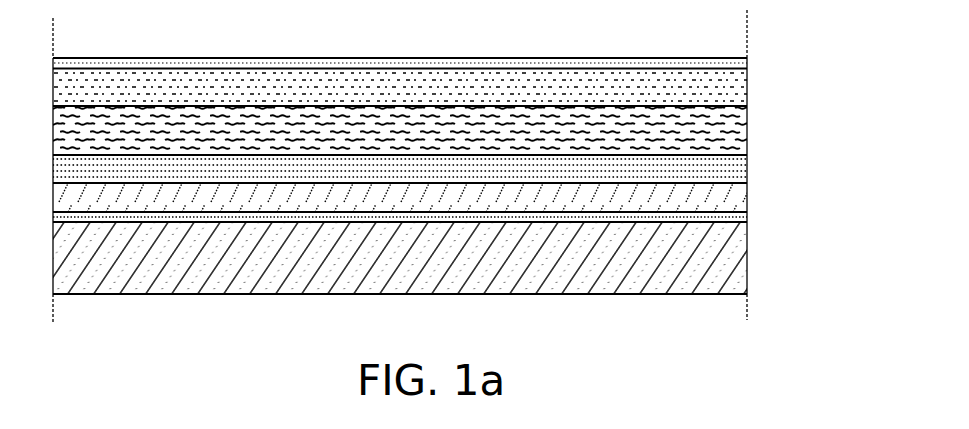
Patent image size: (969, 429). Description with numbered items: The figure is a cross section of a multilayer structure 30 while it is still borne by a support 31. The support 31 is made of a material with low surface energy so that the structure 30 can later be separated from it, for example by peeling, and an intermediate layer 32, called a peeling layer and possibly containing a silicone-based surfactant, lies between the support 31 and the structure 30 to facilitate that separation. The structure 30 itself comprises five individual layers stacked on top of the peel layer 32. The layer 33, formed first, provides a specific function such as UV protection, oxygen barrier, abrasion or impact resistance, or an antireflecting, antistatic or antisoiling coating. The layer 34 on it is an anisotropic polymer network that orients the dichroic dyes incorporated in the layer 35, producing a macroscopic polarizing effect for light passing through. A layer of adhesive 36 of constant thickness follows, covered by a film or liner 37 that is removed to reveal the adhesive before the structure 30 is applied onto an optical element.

The multilayer structure 30 is at (845, 0).
The support 31 is at (582, 283).
The intermediate layer 32 is at (687, 222).
The layer 33 is at (740, 193).
The layer 34 is at (740, 170).
The layer 35 is at (742, 128).
The layer of adhesive 36 is at (727, 83).
The film or liner 37 is at (747, 53).